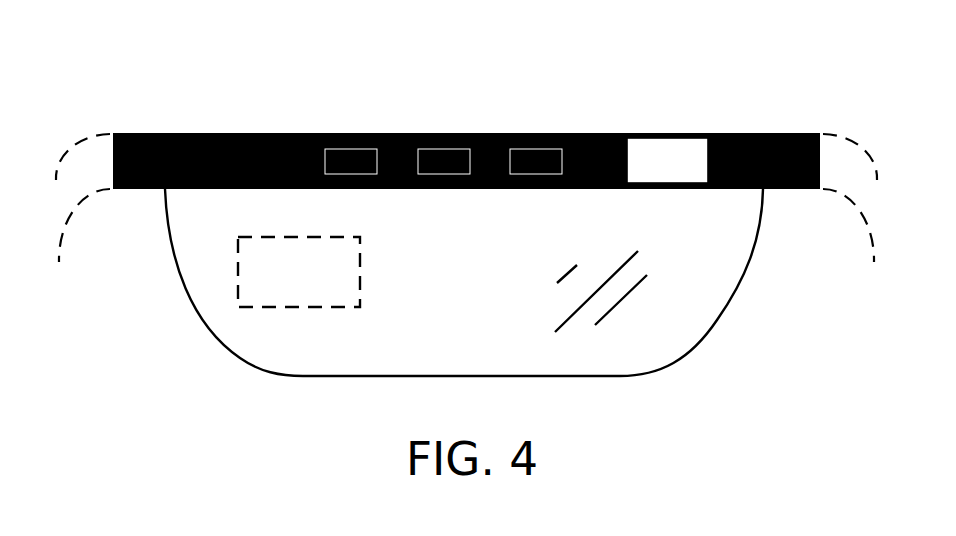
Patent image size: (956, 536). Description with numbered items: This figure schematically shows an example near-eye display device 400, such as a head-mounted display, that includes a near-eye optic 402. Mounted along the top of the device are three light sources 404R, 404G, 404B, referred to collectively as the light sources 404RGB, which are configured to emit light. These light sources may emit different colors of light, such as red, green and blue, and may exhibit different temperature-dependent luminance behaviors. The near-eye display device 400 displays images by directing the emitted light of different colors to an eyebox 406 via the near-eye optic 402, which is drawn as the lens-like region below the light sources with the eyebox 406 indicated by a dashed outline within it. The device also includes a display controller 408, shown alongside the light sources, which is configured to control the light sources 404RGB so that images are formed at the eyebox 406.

The near-eye display device 400 is at (131, 110).
The near-eye optic 402 is at (229, 345).
The light sources 404RGB is at (426, 65).
The light source 404R is at (348, 149).
The light source 404G is at (443, 149).
The light source 404B is at (535, 149).
The eyebox 406 is at (238, 253).
The display controller 408 is at (688, 171).